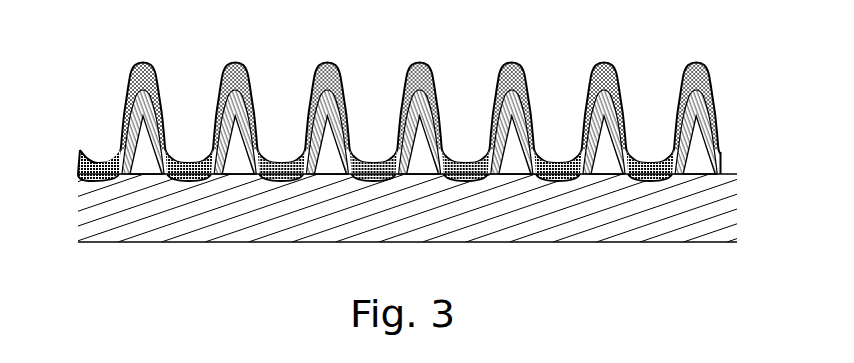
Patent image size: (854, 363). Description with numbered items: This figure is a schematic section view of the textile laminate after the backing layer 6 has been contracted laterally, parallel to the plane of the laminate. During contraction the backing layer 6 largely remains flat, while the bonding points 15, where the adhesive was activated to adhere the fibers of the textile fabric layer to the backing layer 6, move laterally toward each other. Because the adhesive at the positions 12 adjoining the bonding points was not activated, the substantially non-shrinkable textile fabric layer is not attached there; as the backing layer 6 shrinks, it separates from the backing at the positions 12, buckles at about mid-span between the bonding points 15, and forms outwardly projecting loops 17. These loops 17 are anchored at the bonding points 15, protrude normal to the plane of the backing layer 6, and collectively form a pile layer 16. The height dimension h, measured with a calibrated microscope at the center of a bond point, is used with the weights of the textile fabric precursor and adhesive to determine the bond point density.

The backing layer 6 is at (240, 222).
The positions between bonding points 12 is at (251, 105).
The bonding points 15 is at (185, 162).
The pile layer 16 is at (82, 62).
The outwardly projecting loops 17 is at (437, 110).
The height dimension h is at (559, 186).